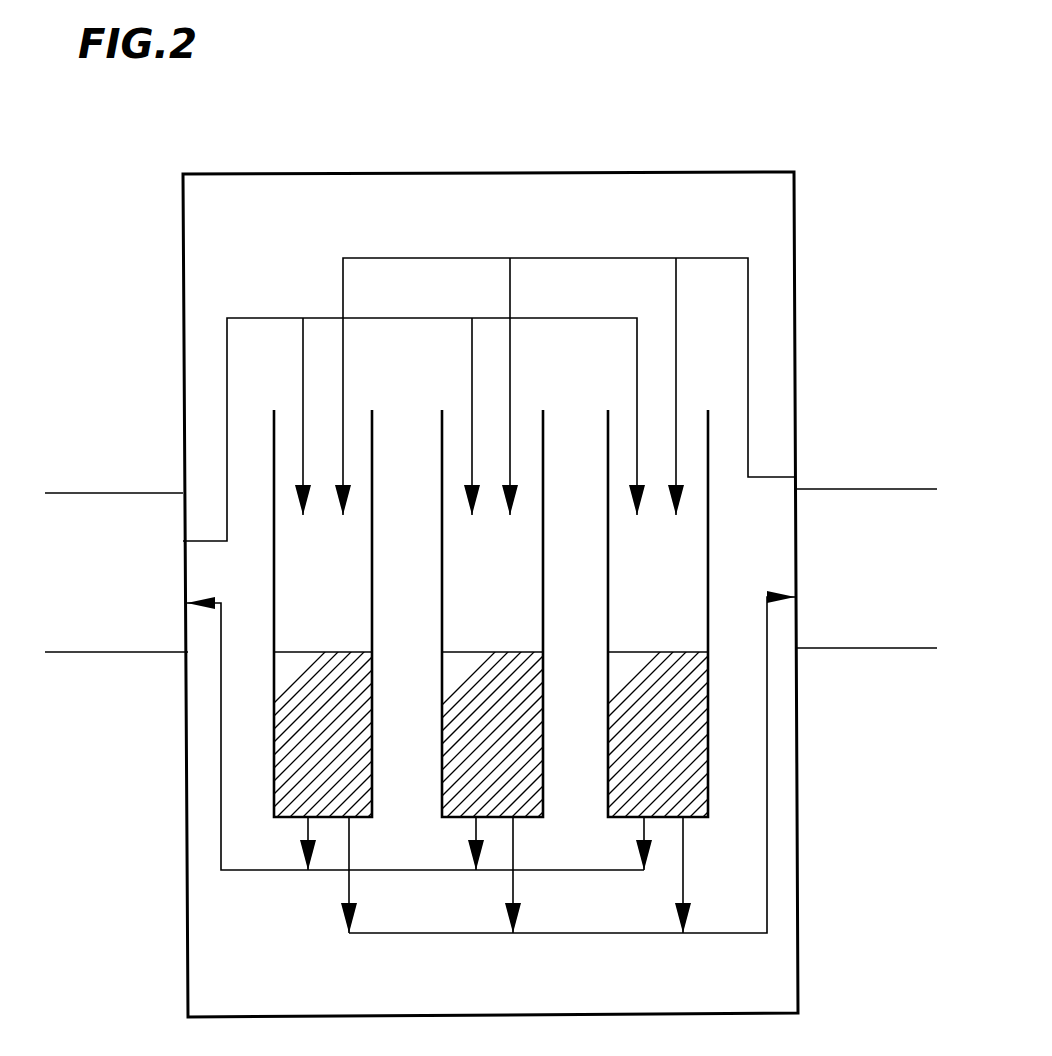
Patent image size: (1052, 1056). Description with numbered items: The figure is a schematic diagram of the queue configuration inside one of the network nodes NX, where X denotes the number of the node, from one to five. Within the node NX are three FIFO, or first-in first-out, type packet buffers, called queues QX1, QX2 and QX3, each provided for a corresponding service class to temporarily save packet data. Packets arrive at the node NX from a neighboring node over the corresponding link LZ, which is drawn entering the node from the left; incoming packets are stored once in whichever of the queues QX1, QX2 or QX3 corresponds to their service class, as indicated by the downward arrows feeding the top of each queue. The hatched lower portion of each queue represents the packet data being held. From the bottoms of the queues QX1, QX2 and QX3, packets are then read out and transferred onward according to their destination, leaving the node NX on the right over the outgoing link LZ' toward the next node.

The node NX is at (627, 173).
The link LZ is at (116, 531).
The link LZ' is at (866, 528).
The queue QX1 is at (276, 818).
The queue QX2 is at (445, 818).
The queue QX3 is at (610, 818).